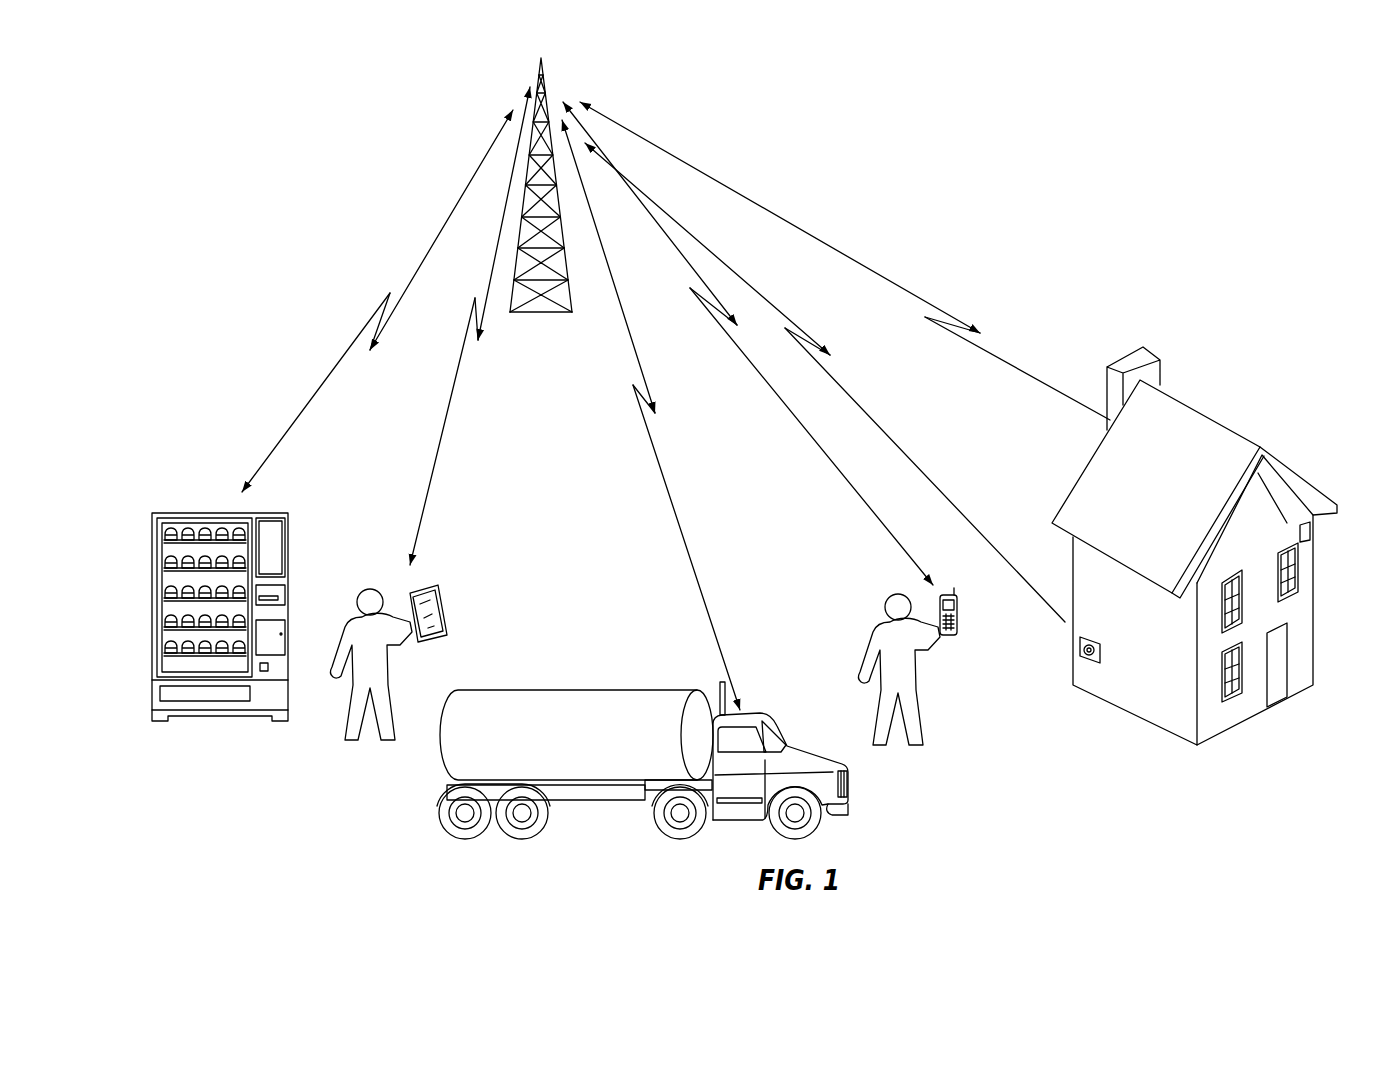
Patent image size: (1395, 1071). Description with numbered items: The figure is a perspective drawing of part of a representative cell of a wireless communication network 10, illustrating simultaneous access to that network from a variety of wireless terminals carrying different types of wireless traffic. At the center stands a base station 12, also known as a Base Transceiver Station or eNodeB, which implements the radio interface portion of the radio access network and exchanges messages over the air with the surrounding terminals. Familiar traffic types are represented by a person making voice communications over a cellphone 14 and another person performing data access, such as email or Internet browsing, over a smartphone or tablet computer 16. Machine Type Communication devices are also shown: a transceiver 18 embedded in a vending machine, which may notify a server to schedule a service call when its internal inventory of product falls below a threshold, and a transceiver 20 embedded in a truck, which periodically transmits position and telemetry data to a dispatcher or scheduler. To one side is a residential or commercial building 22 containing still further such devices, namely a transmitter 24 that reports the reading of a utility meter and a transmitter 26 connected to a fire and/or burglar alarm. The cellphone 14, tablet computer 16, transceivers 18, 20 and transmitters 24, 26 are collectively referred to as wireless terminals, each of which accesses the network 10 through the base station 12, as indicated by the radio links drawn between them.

The wireless communication network 10 is at (972, 136).
The base station 12 is at (532, 71).
The cellphone 14 is at (955, 636).
The smartphone or tablet computer 16 is at (445, 637).
The transceiver embedded in a vending machine 18 is at (289, 553).
The transceiver embedded in a truck 20 is at (745, 713).
The residential or commercial building 22 is at (1203, 443).
The transmitter reporting the reading of a utility meter 24 is at (1080, 652).
The transmitter connected to a fire and/or burglar alarm 26 is at (1310, 534).